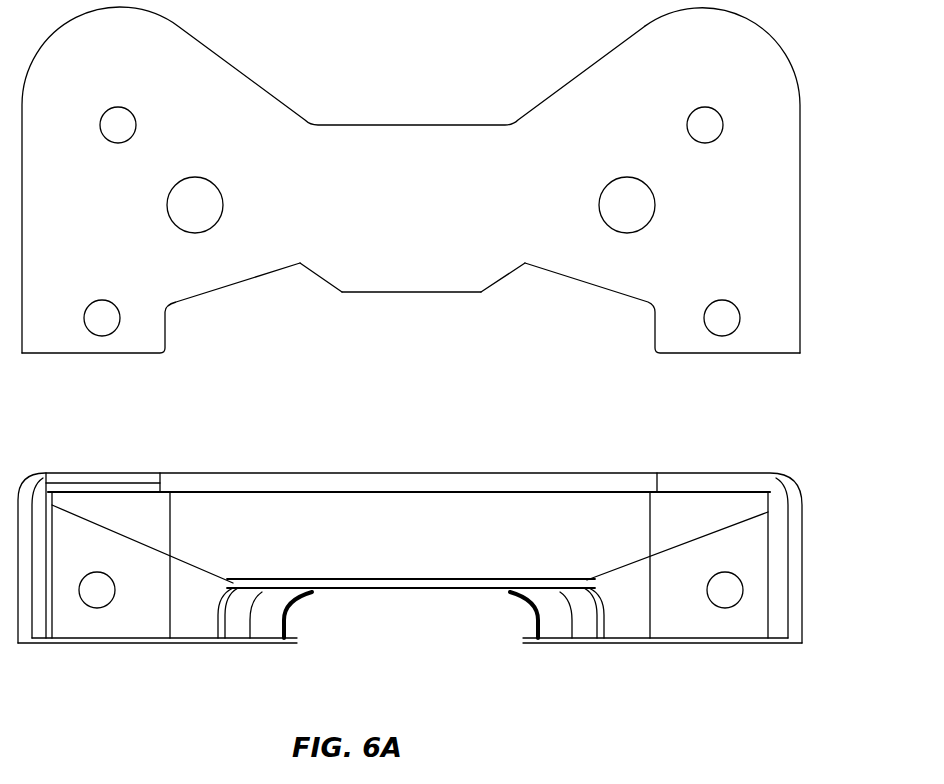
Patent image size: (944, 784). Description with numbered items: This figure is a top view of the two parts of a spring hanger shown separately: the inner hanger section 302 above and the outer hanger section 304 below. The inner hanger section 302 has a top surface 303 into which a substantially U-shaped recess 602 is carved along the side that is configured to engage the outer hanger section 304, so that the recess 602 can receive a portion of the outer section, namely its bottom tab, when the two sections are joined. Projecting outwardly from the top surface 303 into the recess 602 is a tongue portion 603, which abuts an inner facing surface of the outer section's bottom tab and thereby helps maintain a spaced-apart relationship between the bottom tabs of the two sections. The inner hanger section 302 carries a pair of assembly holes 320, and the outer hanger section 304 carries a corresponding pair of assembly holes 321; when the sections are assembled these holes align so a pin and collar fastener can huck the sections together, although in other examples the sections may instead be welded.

The inner hanger section 302 is at (348, 125).
The top surface 303 is at (745, 82).
The outer hanger section 304 is at (438, 567).
The assembly holes 320 is at (106, 318).
The assembly holes 321 is at (100, 595).
The recess 602 is at (500, 335).
The tongue portion 603 is at (378, 293).